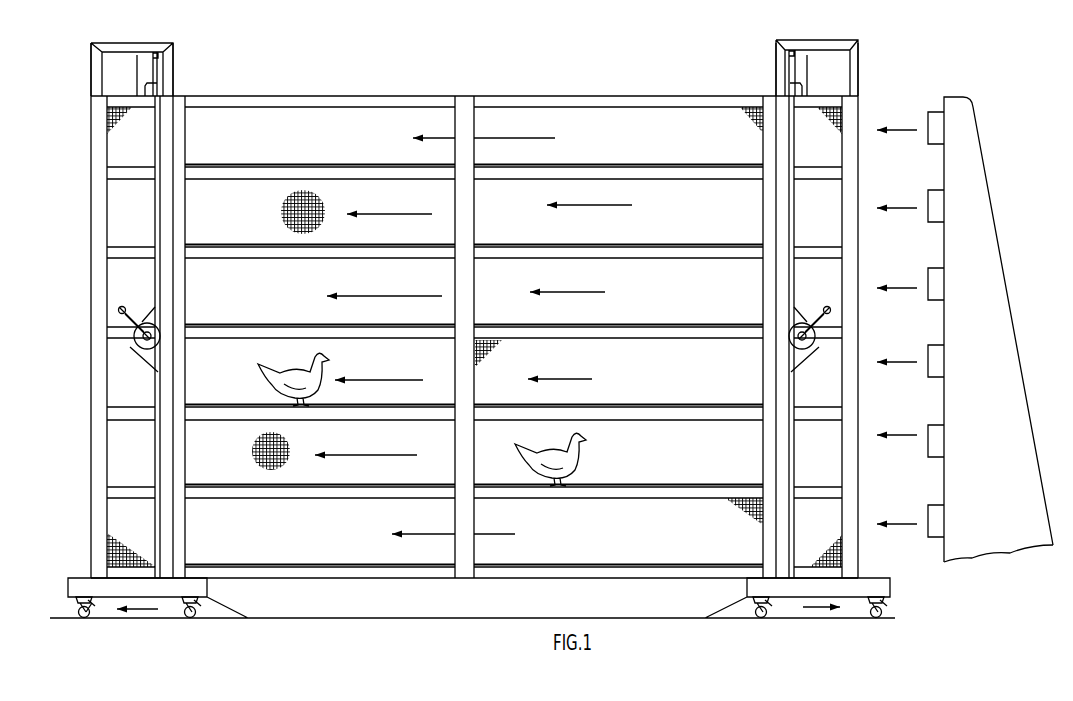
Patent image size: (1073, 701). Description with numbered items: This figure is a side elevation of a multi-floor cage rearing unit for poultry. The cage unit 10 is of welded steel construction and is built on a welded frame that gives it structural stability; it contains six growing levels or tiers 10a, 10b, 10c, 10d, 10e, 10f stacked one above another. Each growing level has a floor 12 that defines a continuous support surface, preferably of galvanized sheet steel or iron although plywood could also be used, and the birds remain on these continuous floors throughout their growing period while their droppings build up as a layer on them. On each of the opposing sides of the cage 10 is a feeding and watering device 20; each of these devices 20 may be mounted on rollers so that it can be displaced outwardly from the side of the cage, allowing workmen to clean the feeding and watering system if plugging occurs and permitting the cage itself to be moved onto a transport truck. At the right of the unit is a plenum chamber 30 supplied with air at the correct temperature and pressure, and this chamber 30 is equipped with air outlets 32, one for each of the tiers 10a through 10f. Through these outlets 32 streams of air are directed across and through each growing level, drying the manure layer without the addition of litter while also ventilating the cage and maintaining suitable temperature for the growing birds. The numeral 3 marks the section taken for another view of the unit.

The cage unit 10 is at (540, 86).
The first growing level or tier 10a is at (518, 136).
The second growing level or tier 10b is at (489, 218).
The third growing level or tier 10c is at (480, 295).
The fourth growing level or tier 10d is at (445, 379).
The fifth growing level or tier 10e is at (477, 459).
The sixth growing level or tier 10f is at (514, 531).
The floor 12 is at (350, 252).
The feeding and watering device 20 is at (131, 43).
The section line for FIG. 3 (crank drive) 3 is at (203, 289).
The plenum chamber 30 is at (352, 167).
The air outlets 32 is at (930, 143).